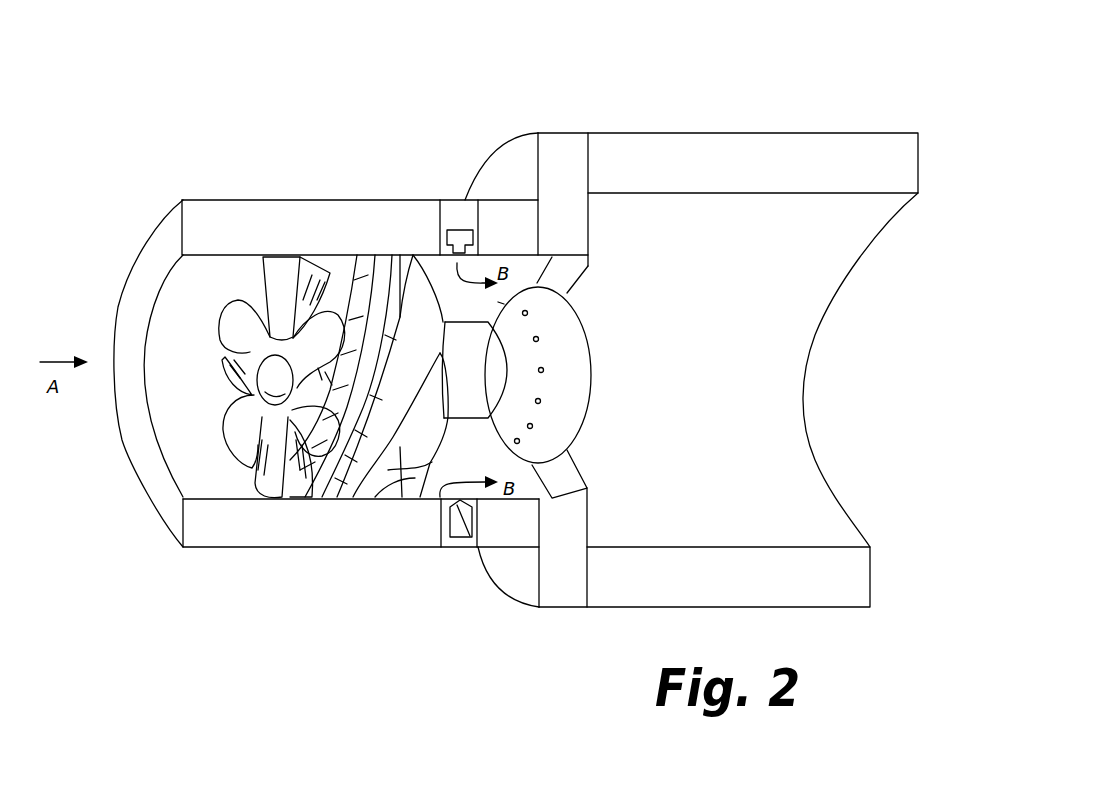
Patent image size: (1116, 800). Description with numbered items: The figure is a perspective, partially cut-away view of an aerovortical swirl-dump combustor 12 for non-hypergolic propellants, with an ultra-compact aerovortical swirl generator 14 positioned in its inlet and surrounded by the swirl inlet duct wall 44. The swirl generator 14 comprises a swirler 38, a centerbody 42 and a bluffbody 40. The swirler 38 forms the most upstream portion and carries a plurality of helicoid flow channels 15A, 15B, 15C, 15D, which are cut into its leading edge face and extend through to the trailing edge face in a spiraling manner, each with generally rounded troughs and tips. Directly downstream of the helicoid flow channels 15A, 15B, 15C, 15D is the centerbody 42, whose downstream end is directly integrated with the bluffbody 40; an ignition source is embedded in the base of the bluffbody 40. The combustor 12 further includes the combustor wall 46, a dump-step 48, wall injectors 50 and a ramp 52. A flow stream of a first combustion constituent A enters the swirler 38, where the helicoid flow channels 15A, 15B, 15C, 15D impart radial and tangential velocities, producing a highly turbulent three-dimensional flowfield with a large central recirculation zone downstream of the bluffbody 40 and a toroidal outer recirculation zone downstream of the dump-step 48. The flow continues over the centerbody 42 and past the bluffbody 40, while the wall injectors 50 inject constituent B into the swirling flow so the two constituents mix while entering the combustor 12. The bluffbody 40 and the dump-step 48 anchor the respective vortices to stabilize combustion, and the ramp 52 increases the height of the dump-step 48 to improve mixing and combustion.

The aerovortical swirl-dump combustor 12 is at (493, 120).
The aerovortical swirl generator 14 is at (190, 298).
The swirler 38 is at (228, 430).
The swirl inlet duct wall 44 is at (253, 218).
The combustor wall 46 is at (702, 165).
The dump-step 48 is at (598, 223).
The wall injectors 50 is at (453, 230).
The ramp 52 is at (558, 482).
The bluffbody 40 is at (583, 424).
The centerbody 42 is at (489, 384).
The helicoid flow channel 15A is at (305, 462).
The helicoid flow channel 15B is at (297, 462).
The helicoid flow channel 15C is at (410, 462).
The helicoid flow channel 15D is at (430, 462).